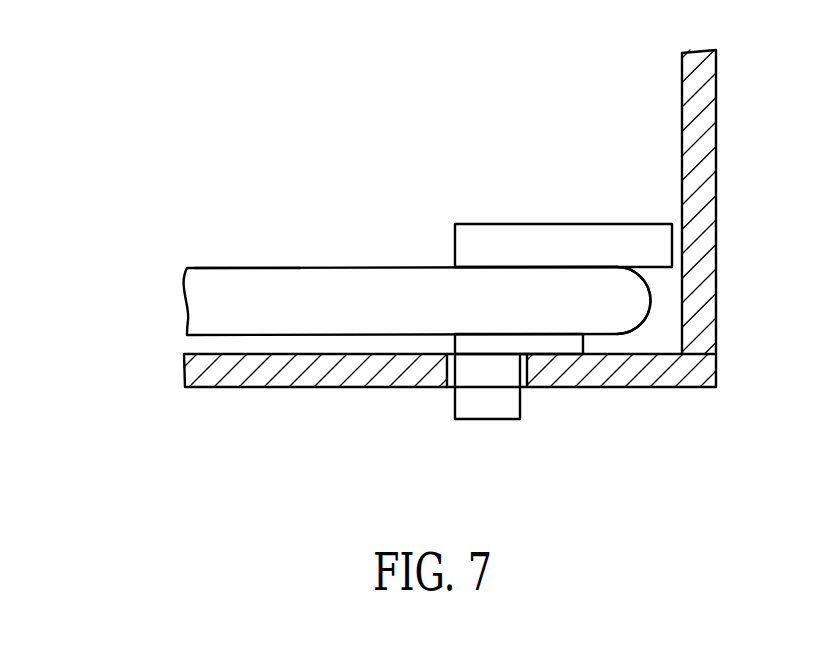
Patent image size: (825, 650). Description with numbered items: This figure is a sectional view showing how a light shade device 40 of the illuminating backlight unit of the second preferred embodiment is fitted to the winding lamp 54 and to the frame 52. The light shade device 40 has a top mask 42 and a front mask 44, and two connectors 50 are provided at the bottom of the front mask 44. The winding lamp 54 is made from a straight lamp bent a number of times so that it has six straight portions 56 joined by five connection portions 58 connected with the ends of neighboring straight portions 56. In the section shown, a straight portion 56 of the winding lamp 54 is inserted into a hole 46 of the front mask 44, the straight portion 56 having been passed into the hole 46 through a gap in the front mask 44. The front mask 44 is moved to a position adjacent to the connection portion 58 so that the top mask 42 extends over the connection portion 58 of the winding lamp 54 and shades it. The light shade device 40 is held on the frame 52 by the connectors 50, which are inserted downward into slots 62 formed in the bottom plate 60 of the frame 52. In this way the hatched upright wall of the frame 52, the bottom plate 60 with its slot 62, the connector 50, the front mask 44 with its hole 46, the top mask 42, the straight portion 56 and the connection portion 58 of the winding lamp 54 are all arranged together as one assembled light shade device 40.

The light shade device 40 is at (588, 177).
The top mask 42 is at (530, 224).
The front mask 44 is at (452, 340).
The hole 46 is at (498, 267).
The connector 50 is at (497, 407).
The frame 52 is at (702, 162).
The winding lamp 54 is at (332, 235).
The straight portion 56 is at (255, 267).
The connection portion 58 is at (633, 300).
The bottom plate 60 is at (635, 373).
The slot 62 is at (528, 370).